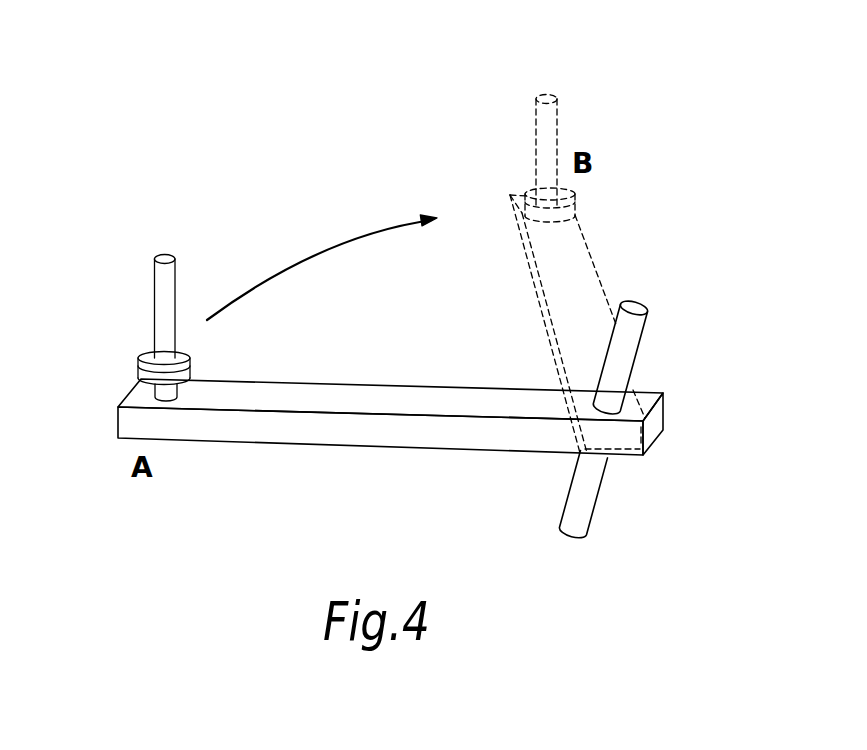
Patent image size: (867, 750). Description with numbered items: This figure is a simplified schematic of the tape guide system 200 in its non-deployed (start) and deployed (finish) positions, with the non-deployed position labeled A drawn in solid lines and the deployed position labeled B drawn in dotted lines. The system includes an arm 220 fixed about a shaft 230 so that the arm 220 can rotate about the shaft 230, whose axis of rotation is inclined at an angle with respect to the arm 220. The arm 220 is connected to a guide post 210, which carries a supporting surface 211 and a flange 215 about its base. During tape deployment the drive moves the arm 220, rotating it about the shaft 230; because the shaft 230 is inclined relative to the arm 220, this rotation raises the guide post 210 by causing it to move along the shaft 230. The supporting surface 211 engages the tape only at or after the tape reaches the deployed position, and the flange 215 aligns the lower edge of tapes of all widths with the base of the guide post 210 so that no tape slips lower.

The tape guide system 200 is at (637, 95).
The guide post 210 is at (160, 293).
The supporting surface 211 is at (165, 278).
The flange 215 is at (140, 377).
The arm 220 is at (303, 435).
The shaft 230 is at (587, 487).